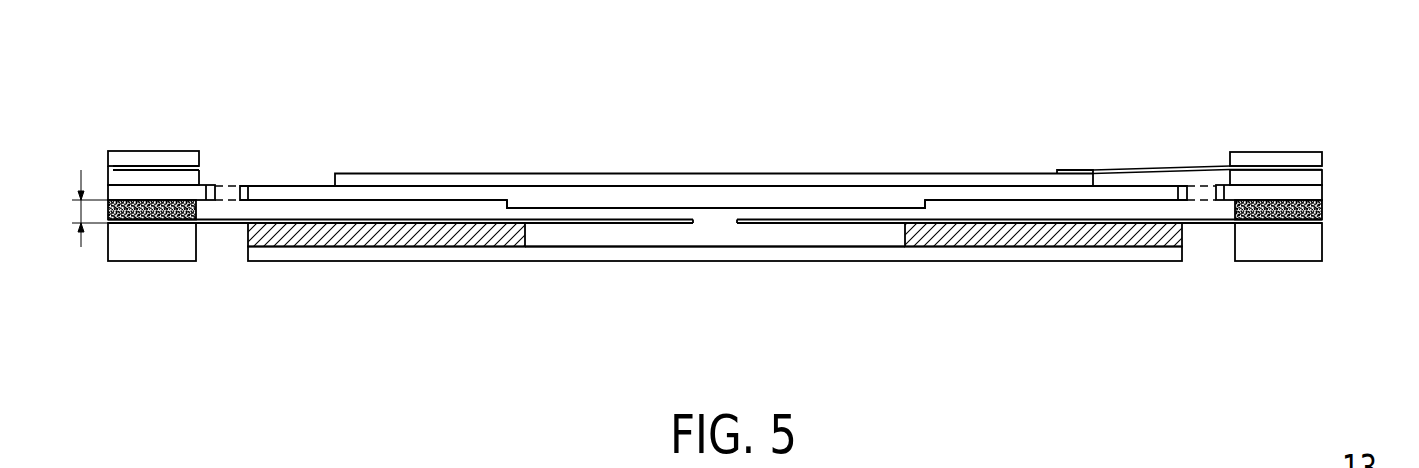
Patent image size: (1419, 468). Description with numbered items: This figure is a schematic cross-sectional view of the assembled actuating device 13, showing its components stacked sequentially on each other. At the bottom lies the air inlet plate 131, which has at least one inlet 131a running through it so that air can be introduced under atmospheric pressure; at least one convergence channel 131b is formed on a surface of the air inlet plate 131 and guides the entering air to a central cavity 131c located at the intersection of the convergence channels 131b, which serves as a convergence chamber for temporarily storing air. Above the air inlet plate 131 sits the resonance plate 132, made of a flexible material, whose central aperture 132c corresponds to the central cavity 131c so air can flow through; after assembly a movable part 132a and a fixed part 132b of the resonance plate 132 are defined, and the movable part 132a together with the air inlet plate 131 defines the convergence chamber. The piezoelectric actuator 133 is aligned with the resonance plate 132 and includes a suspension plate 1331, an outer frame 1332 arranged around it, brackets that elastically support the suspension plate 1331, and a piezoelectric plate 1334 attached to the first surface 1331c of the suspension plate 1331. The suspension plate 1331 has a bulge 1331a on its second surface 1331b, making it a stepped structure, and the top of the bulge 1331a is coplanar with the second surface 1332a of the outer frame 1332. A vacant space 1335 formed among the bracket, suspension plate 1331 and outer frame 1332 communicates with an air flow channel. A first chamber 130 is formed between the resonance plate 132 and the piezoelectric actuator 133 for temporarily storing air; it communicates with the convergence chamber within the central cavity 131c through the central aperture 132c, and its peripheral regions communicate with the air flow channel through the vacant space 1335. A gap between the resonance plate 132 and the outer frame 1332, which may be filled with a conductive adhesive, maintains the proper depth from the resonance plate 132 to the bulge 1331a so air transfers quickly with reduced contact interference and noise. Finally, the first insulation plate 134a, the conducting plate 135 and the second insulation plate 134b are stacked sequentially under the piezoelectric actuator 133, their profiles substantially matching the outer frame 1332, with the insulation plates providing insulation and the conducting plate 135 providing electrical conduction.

The actuating device 13 is at (1381, 53).
The first chamber 130 is at (403, 212).
The air inlet plate 131 is at (1276, 242).
The inlet 131a is at (228, 279).
The convergence channel 131b is at (385, 250).
The central cavity 131c is at (628, 232).
The resonance plate 132 is at (940, 332).
The movable part 132a is at (792, 226).
The fixed part 132b is at (934, 224).
The central aperture 132c is at (718, 236).
The piezoelectric actuator 133 is at (1303, 190).
The suspension plate 1331 is at (1008, 192).
The bulge 1331a is at (562, 207).
The second surface 1331b is at (1063, 192).
The first surface 1331c is at (900, 186).
The outer frame 1332 is at (177, 193).
The second surface 1332a is at (127, 198).
The piezoelectric plate 1334 is at (738, 182).
The vacant space 1335 is at (237, 190).
The first insulation plate 134a is at (1293, 180).
The second insulation plate 134b is at (1253, 158).
The conducting plate 135 is at (1302, 167).